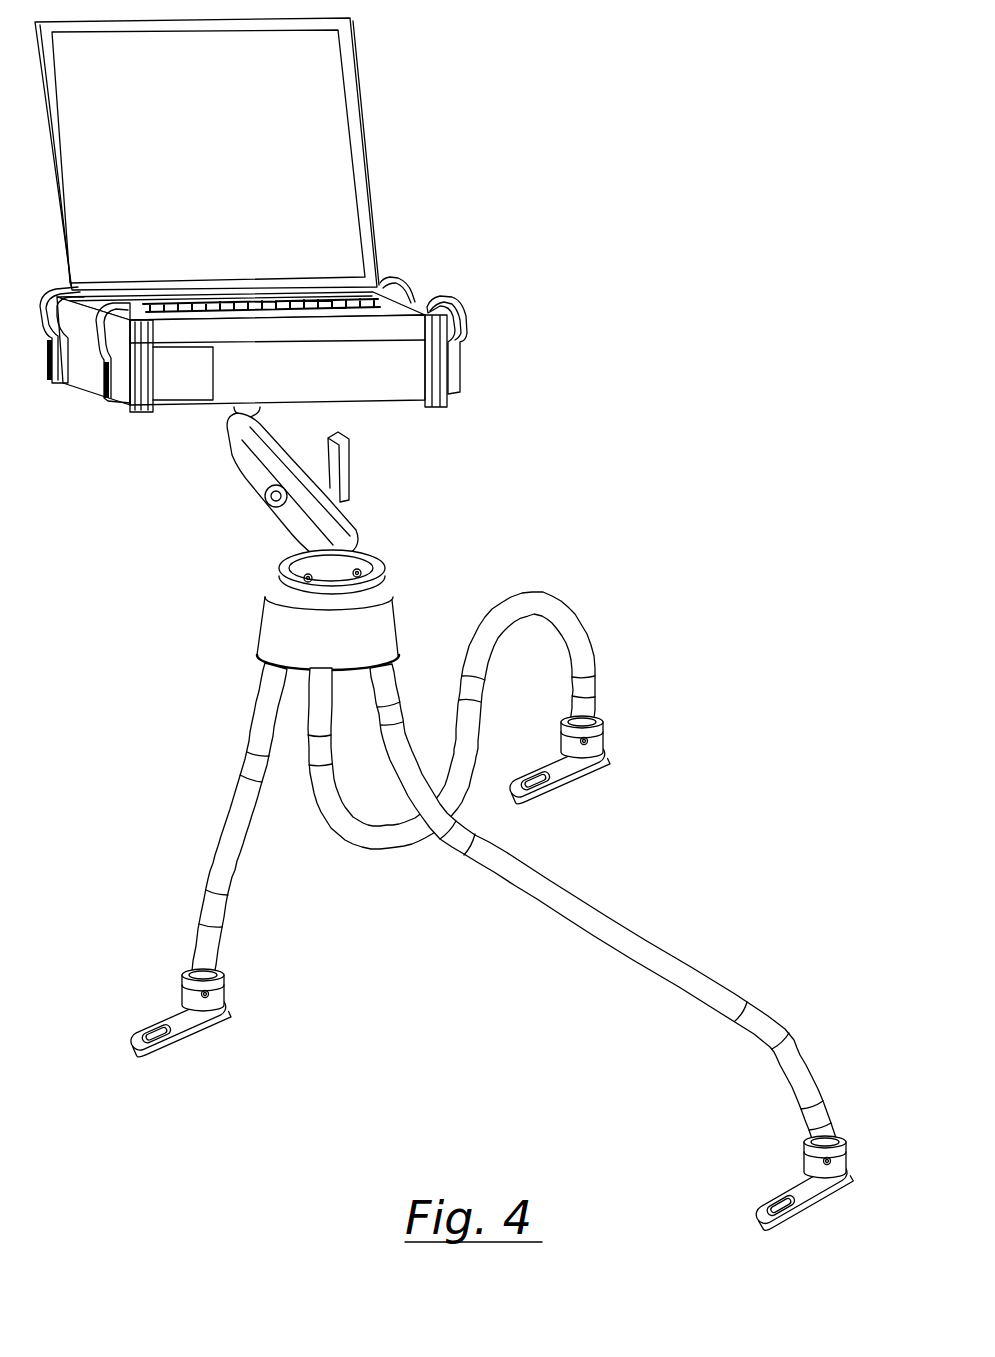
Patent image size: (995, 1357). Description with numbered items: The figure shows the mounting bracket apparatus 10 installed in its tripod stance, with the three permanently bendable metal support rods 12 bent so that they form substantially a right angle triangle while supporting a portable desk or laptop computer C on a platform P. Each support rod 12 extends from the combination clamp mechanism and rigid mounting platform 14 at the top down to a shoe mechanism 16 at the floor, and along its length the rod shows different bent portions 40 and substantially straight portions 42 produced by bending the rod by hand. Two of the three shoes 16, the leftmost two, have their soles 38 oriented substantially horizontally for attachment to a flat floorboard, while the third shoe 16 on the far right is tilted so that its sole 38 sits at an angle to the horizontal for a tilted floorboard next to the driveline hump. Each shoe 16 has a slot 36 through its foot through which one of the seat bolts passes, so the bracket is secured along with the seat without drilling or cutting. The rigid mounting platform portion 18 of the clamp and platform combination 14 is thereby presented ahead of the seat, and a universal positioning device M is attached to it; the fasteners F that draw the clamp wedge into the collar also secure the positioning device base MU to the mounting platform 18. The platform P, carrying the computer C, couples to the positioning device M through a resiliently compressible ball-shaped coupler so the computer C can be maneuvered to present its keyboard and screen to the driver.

The mounting bracket apparatus 10 is at (485, 551).
The support rods 12 is at (508, 849).
The combination clamp mechanism and rigid mounting platform 14 is at (262, 630).
The shoe mechanism 16 is at (475, 986).
The mounting platform portion 18 is at (298, 550).
The slot 36 is at (475, 999).
The sole 38 is at (197, 1037).
The bent portions 40 is at (553, 613).
The straight portions 42 is at (385, 690).
The laptop computer C is at (412, 146).
The platform P is at (474, 273).
The universal positioning device M is at (375, 475).
The positioning device base MU is at (333, 583).
The fasteners F is at (308, 577).